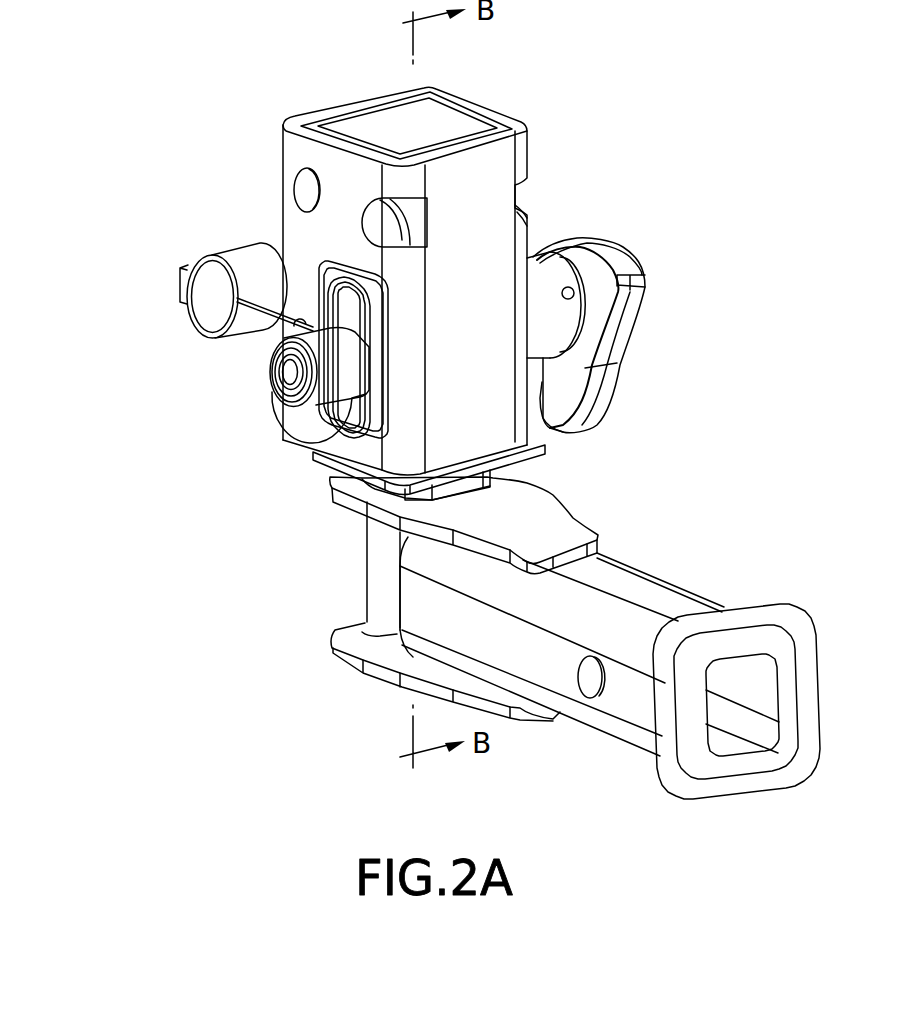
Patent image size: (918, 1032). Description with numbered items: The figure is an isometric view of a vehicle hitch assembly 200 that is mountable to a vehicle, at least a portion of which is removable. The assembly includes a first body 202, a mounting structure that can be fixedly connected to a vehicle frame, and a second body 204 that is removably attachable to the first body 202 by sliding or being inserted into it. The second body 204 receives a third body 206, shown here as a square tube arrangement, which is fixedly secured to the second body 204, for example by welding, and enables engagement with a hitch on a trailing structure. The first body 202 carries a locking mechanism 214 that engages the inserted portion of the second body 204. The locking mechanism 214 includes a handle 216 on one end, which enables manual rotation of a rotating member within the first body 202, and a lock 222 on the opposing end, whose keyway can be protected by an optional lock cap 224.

The vehicle hitch assembly 200 is at (124, 126).
The first body 202 is at (512, 158).
The second body 204 is at (463, 478).
The third body 206 is at (616, 726).
The locking mechanism 214 is at (336, 373).
The handle 216 is at (632, 272).
The lock 222 is at (300, 390).
The lock cap 224 is at (213, 300).